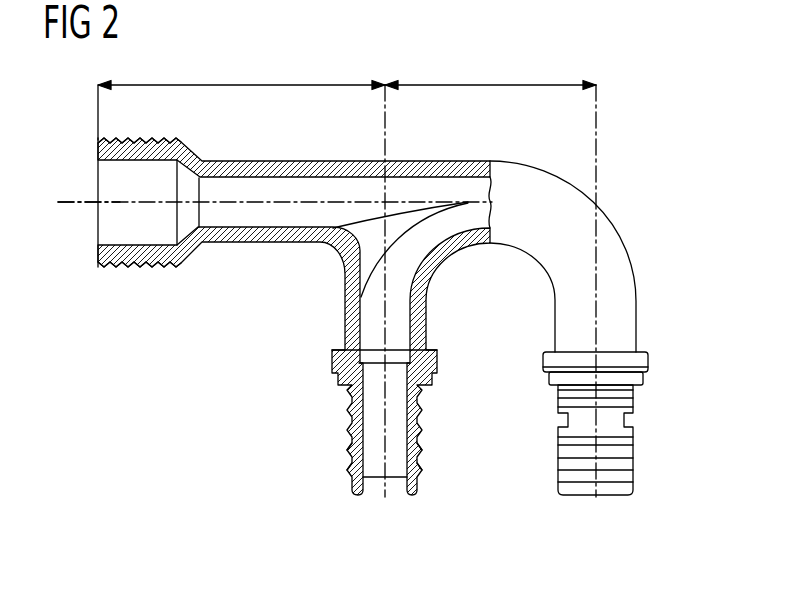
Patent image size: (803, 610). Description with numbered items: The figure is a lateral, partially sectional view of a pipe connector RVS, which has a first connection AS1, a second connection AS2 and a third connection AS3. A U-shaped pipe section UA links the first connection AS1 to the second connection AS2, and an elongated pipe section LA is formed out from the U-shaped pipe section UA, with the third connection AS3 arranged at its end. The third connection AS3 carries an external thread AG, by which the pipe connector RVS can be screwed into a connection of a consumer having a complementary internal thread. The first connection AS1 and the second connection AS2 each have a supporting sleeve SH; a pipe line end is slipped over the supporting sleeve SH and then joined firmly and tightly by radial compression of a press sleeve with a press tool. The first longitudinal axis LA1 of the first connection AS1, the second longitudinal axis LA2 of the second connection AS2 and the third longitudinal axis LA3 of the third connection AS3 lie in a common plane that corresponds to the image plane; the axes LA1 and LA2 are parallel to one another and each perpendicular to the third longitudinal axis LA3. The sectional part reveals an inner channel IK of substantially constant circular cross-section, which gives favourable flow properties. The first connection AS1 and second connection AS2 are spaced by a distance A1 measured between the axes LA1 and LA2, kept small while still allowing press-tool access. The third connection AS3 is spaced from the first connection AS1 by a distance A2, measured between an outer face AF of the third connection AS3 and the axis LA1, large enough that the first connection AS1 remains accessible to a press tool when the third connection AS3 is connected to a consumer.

The pipe connector RVS is at (672, 82).
The distance A1 is at (490, 74).
The distance A2 is at (241, 99).
The external thread AG is at (137, 140).
The elongated pipe section LA is at (272, 158).
The first longitudinal axis LA1 is at (388, 130).
The second longitudinal axis LA2 is at (598, 133).
The third longitudinal axis LA3 is at (80, 200).
The U-shaped pipe section UA is at (528, 157).
The outer face AF is at (97, 232).
The first connection AS1 is at (380, 507).
The second connection AS2 is at (591, 507).
The third connection AS3 is at (118, 270).
The inner channel IK is at (378, 280).
The supporting sleeve SH is at (421, 466).